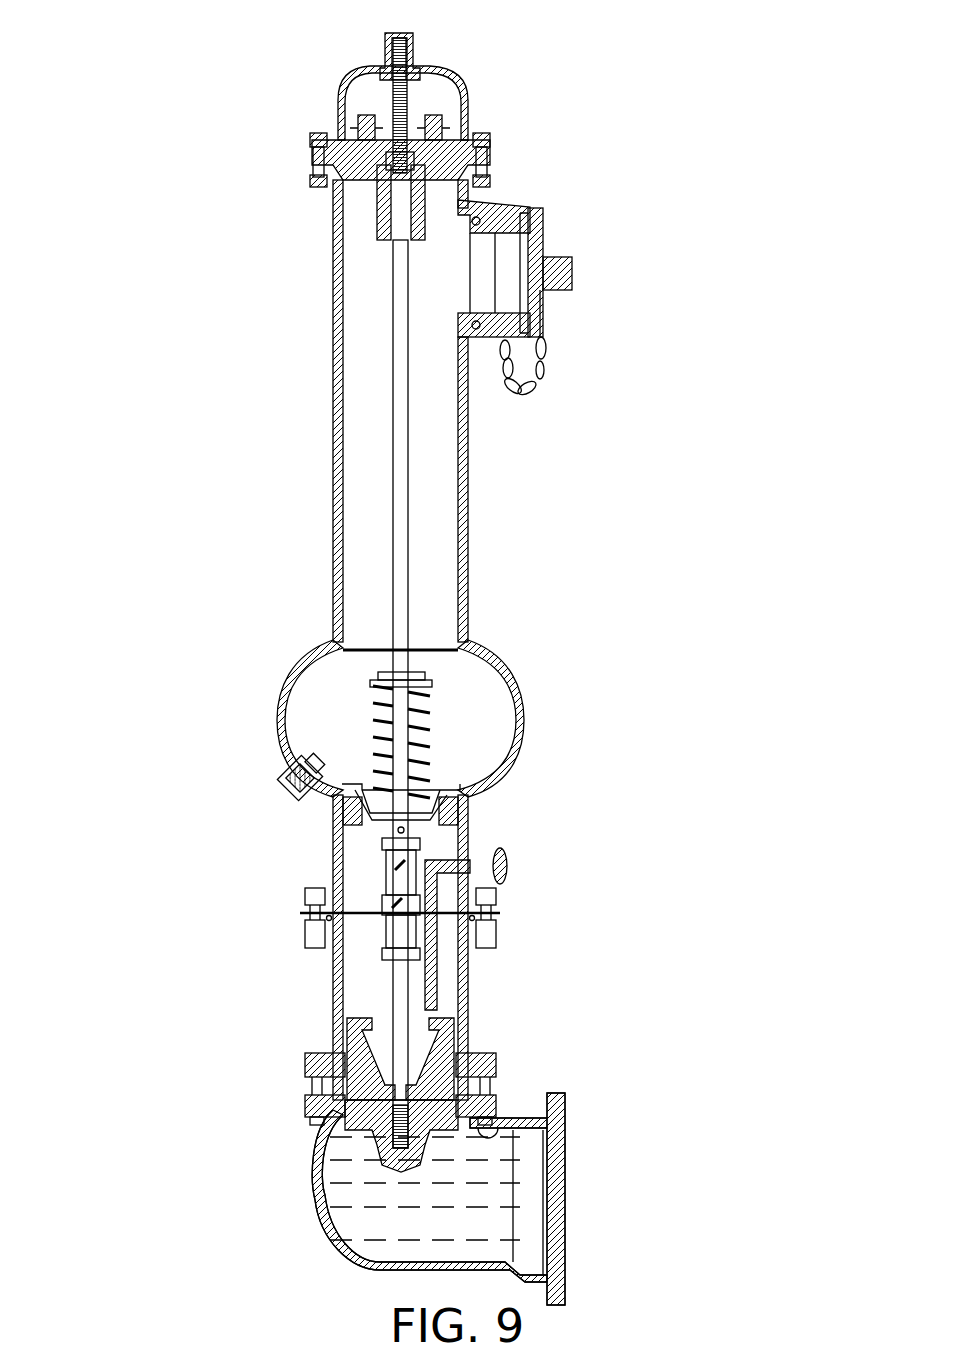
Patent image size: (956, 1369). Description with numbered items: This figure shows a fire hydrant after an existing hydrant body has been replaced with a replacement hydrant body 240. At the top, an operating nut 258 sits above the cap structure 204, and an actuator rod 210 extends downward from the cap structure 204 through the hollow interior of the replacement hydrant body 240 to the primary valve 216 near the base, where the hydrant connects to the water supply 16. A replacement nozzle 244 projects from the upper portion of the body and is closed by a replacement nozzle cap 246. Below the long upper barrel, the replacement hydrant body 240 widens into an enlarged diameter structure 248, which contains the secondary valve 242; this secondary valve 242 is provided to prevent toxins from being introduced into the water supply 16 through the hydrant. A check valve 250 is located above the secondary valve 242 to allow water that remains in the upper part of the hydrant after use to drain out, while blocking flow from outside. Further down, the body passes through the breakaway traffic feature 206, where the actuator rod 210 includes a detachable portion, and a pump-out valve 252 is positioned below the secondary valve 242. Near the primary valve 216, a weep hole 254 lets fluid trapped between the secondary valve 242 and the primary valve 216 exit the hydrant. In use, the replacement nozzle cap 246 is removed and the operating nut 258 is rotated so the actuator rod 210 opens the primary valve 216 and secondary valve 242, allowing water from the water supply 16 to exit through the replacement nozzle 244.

The operating nut 258 is at (390, 46).
The cap structure 204 is at (470, 92).
The replacement nozzle 244 is at (512, 212).
The replacement nozzle cap 246 is at (542, 222).
The actuator rod 210 is at (400, 400).
The replacement hydrant body 240 is at (128, 150).
The enlarged diameter structure 248 is at (278, 716).
The secondary valve 242 is at (454, 766).
The check valve 250 is at (292, 792).
The traffic feature 206 is at (288, 910).
The pump-out valve 252 is at (508, 868).
The weep hole 254 is at (342, 1035).
The primary valve 216 is at (452, 1058).
The water supply 16 is at (636, 1204).